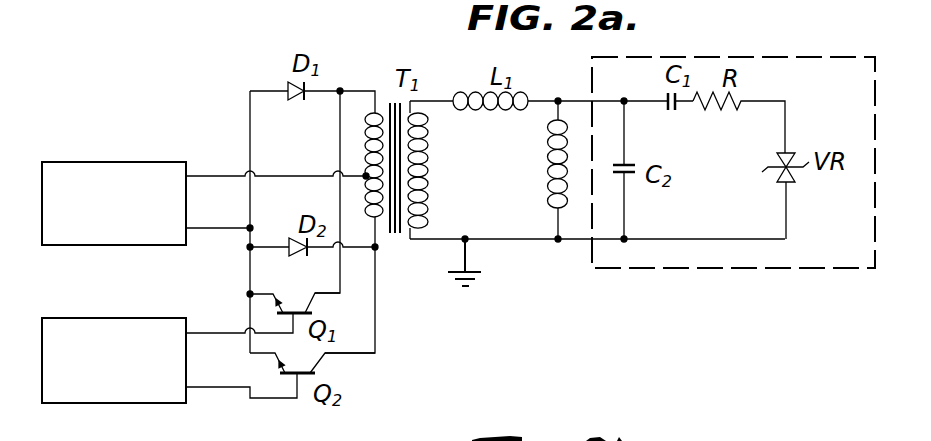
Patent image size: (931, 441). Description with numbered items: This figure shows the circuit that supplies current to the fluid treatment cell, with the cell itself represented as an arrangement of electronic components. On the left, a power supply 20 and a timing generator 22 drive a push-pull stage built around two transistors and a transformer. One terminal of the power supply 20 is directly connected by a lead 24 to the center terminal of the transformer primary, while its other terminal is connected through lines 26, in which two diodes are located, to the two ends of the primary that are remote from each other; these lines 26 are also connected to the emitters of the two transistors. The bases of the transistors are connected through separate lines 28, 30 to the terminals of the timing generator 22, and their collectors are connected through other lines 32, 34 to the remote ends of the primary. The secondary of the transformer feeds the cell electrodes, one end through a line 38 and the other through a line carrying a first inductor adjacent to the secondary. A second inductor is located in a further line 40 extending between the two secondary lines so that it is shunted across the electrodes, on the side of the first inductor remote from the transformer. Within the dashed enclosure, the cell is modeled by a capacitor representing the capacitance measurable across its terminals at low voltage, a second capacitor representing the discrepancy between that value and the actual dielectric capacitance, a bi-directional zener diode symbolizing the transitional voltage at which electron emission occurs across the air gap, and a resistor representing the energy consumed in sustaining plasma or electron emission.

The power supply 20 is at (133, 127).
The timing generator 22 is at (133, 320).
The lead 24 is at (233, 145).
The lines 26 is at (200, 229).
The line 28 is at (230, 330).
The line 30 is at (217, 388).
The line 32 is at (340, 128).
The line 34 is at (377, 320).
The line 38 is at (520, 241).
The line 40 is at (557, 222).